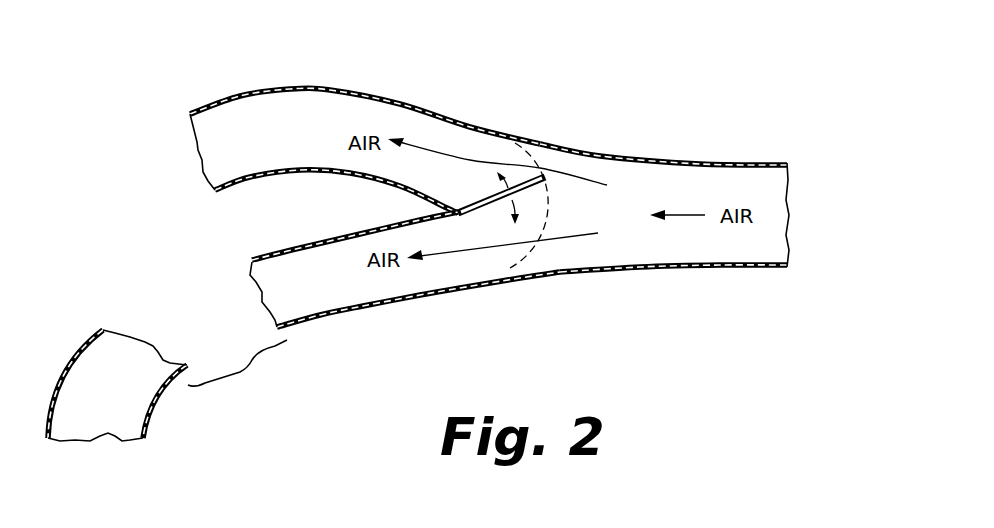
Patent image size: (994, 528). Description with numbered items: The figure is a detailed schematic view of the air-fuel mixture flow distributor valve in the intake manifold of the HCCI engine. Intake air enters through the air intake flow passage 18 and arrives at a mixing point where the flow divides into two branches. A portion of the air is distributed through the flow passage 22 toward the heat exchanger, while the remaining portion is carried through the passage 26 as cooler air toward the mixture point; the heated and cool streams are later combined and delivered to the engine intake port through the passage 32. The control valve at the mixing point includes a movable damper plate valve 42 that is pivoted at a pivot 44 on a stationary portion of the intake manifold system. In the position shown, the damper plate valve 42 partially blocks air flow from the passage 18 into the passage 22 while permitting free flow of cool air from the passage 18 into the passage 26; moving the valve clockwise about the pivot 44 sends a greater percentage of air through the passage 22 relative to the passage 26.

The air intake flow passage 18 is at (780, 166).
The flow passage 22 is at (385, 100).
The passage 26 is at (423, 290).
The passage 32 is at (105, 389).
The movable damper plate valve 42 is at (465, 200).
The pivot 44 is at (465, 200).